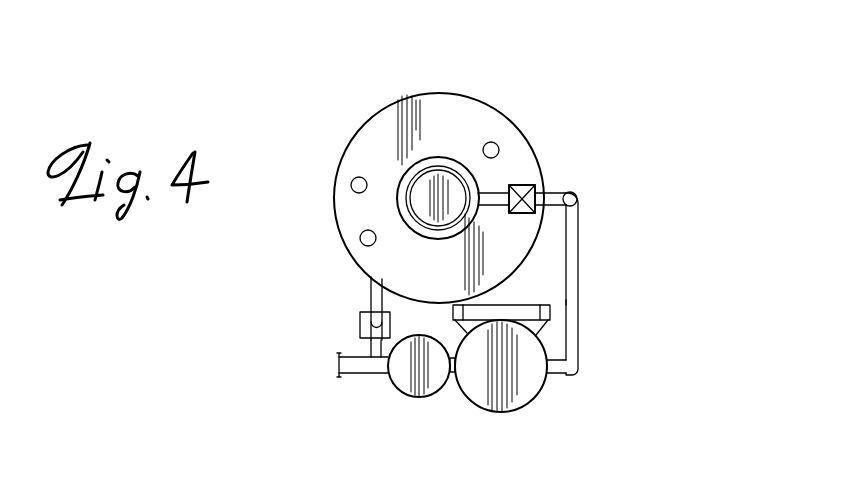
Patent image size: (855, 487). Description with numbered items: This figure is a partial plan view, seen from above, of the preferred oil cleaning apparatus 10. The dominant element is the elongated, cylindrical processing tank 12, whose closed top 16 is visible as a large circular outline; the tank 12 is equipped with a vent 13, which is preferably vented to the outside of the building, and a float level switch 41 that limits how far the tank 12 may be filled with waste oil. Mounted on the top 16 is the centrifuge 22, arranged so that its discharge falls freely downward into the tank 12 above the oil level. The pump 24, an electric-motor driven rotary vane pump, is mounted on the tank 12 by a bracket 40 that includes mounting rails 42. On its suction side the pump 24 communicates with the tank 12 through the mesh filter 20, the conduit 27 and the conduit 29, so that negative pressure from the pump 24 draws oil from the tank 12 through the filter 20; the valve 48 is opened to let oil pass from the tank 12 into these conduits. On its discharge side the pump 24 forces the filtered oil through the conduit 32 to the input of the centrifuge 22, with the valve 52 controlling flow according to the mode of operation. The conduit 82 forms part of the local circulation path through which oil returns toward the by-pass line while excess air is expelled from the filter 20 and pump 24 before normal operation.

The apparatus 10 is at (245, 357).
The processing tank 12 is at (331, 170).
The vent 13 is at (491, 141).
The closed top 16 is at (438, 113).
The mesh filter 20 is at (413, 402).
The centrifuge 22 is at (482, 178).
The pump 24 is at (545, 397).
The conduit 27 is at (370, 363).
The conduit 29 is at (370, 298).
The conduit 32 is at (578, 229).
The bracket 40 is at (545, 287).
The float level switch 41 is at (360, 240).
The mounting rails 42 is at (550, 313).
The valve 48 is at (358, 325).
The valve 52 is at (536, 186).
The conduit 82 is at (556, 371).